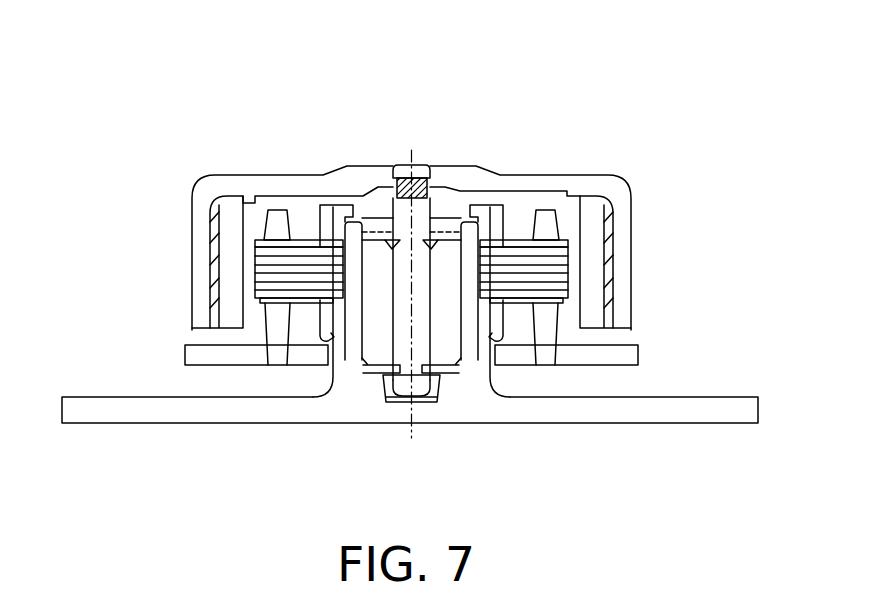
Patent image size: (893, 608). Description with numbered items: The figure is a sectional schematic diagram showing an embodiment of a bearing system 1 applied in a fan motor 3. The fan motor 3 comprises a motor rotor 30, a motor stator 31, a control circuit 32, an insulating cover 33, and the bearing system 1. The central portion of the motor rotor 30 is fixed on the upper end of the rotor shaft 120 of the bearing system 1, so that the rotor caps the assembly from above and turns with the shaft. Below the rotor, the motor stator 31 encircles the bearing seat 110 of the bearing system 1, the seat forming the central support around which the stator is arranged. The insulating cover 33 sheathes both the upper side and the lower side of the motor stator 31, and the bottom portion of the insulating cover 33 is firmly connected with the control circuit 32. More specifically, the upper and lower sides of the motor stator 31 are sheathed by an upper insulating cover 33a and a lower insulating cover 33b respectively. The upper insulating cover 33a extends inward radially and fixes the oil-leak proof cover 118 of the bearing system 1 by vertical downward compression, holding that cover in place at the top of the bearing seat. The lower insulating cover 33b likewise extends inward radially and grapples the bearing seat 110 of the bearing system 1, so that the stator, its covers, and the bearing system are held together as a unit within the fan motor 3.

The fan motor 3 is at (367, 95).
The motor rotor 30 is at (460, 174).
The rotor shaft 120 is at (400, 172).
The oil-leak proof cover 118 is at (377, 220).
The bearing system 1 is at (366, 363).
The bearing seat 110 is at (457, 405).
The control circuit 32 is at (625, 355).
The motor stator 31 is at (270, 268).
The insulating cover 33 is at (566, 226).
The upper insulating cover 33a is at (493, 217).
The lower insulating cover 33b is at (500, 318).